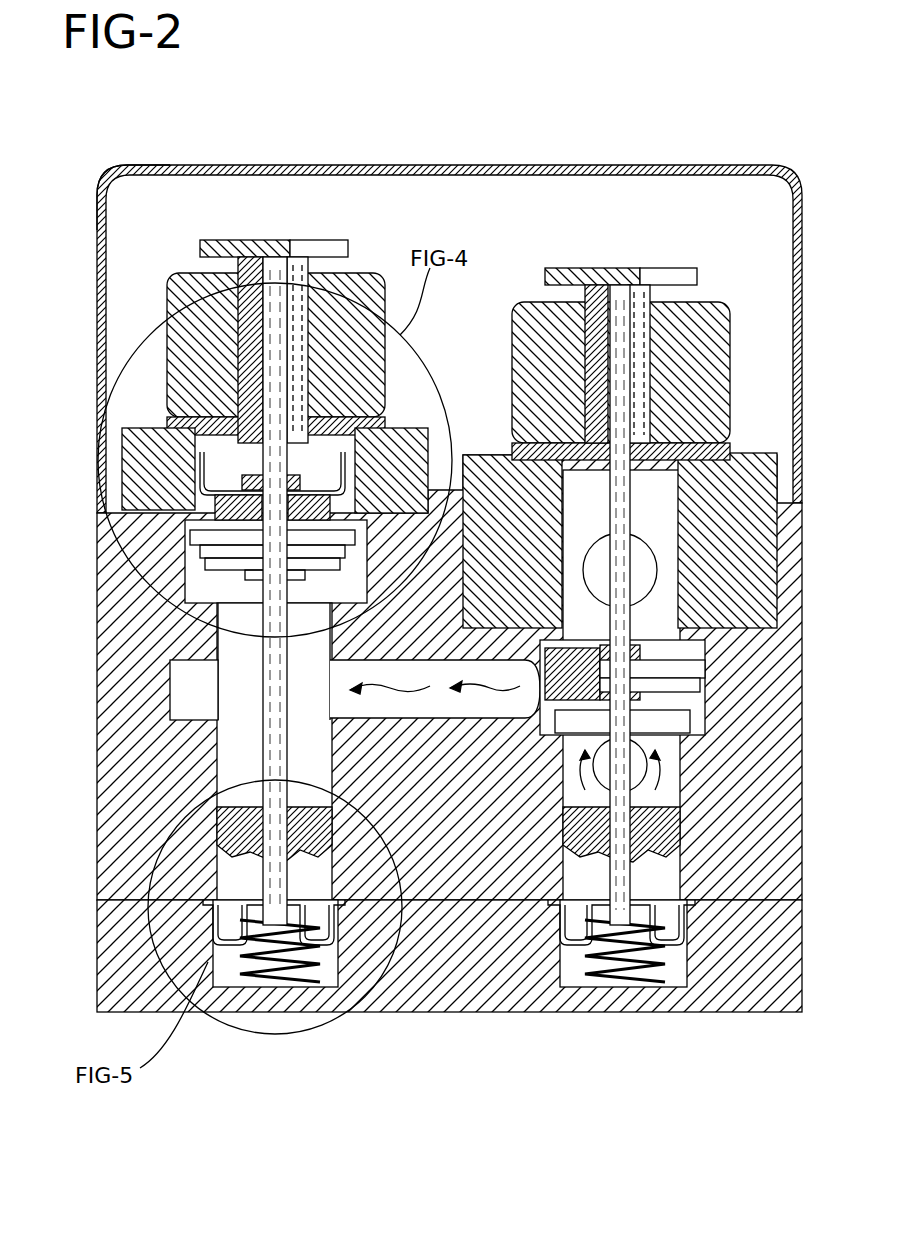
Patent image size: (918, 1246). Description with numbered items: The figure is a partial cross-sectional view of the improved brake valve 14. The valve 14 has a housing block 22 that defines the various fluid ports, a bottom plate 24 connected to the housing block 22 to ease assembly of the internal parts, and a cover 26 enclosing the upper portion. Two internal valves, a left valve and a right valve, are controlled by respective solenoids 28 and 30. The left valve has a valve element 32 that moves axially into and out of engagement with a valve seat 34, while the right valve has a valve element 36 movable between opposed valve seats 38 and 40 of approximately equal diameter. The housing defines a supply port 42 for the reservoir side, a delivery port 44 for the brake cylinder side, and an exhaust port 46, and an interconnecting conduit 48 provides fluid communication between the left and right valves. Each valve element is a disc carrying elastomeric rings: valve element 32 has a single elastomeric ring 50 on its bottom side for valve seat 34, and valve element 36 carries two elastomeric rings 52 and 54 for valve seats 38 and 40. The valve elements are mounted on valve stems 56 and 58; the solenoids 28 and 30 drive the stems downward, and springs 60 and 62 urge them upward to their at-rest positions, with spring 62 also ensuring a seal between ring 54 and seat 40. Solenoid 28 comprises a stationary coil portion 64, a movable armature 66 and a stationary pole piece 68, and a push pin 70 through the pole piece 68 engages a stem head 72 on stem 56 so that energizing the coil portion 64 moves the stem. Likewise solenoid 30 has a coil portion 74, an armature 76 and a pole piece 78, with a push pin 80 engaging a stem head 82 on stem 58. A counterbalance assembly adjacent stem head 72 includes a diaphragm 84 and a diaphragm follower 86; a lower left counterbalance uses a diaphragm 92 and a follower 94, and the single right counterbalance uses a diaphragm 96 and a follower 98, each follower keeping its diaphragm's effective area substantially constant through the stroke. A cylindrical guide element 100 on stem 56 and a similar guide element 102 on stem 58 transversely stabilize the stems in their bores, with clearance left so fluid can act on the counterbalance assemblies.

The brake valve 14 is at (462, 137).
The housing block 22 is at (107, 603).
The bottom plate 24 is at (100, 962).
The cover 26 is at (103, 183).
The solenoid 28 is at (271, 364).
The solenoid 30 is at (659, 325).
The valve element 32 is at (265, 578).
The valve seat 34 is at (220, 652).
The valve element 36 is at (705, 658).
The valve seat 38 is at (705, 718).
The valve seat 40 is at (740, 593).
The supply port 42 is at (690, 747).
The delivery port 44 is at (205, 545).
The exhaust port 46 is at (792, 456).
The interconnecting conduit 48 is at (440, 720).
The elastomeric ring 50 is at (230, 592).
The elastomeric ring 52 is at (690, 688).
The elastomeric ring 54 is at (710, 633).
The valve stem 56 is at (275, 742).
The valve stem 58 is at (690, 780).
The spring 60 is at (300, 975).
The spring 62 is at (640, 975).
The coil portion 64 is at (170, 278).
The armature 66 is at (292, 240).
The pole piece 68 is at (345, 390).
The push pin 70 is at (275, 336).
The stem head 72 is at (430, 468).
The coil portion 74 is at (735, 375).
The armature 76 is at (605, 268).
The pole piece 78 is at (585, 385).
The push pin 80 is at (665, 447).
The stem head 82 is at (680, 555).
The diaphragm 84 is at (165, 470).
The diaphragm follower 86 is at (400, 432).
The diaphragm 92 is at (230, 905).
The follower 94 is at (320, 902).
The diaphragm 96 is at (690, 935).
The follower 98 is at (560, 922).
The guide element 100 is at (345, 880).
The guide element 102 is at (700, 850).